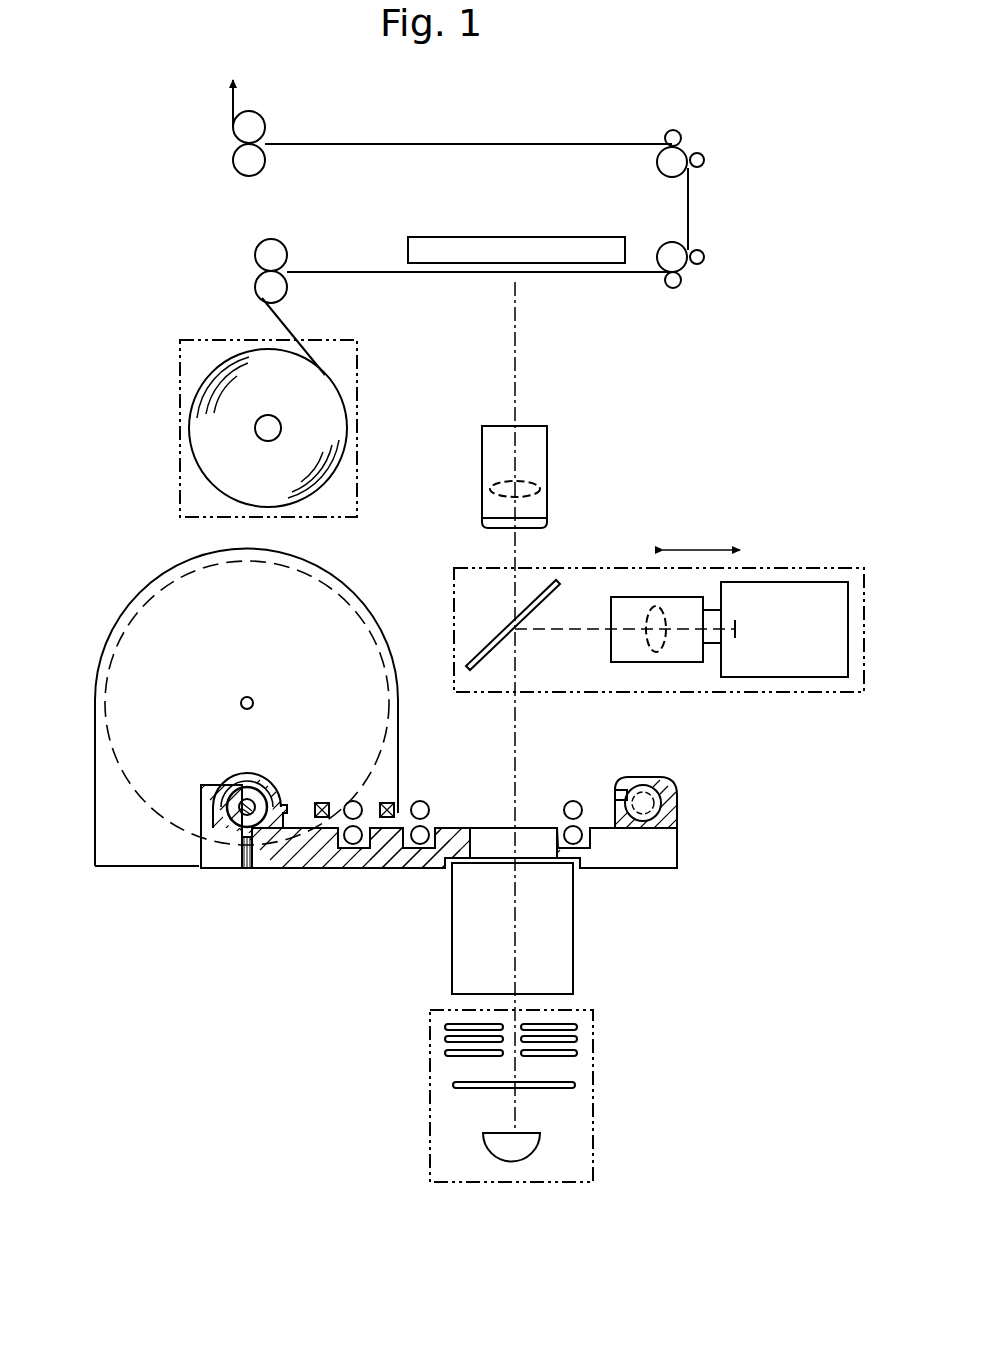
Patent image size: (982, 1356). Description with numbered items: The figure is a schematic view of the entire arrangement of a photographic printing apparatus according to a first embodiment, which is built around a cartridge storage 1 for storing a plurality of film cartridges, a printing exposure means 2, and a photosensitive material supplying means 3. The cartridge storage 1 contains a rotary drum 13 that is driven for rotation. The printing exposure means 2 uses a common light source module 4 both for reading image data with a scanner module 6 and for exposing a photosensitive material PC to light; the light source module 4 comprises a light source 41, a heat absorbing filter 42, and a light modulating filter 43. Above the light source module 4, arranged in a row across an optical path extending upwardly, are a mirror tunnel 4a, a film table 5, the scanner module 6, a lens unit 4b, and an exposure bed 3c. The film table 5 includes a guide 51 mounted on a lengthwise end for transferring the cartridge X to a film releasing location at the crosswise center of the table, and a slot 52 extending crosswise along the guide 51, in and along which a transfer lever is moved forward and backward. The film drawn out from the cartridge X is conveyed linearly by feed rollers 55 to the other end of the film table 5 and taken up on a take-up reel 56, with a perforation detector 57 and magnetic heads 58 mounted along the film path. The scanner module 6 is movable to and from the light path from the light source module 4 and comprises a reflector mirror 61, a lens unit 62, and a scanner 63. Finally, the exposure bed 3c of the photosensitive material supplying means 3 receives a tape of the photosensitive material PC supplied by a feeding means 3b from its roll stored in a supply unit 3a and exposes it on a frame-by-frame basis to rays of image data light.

The cartridge storage 1 is at (212, 707).
The rotary drum 13 is at (112, 676).
The printing exposure means 2 is at (710, 513).
The photosensitive material supplying means 3 is at (222, 312).
The supply unit 3a is at (180, 398).
The feeding means 3b is at (607, 134).
The exposure bed 3c is at (560, 240).
The photosensitive material PC is at (340, 270).
The light source module 4 is at (508, 1125).
The mirror tunnel 4a is at (560, 945).
The lens unit 4b is at (536, 449).
The light source 41 is at (513, 1158).
The heat absorbing filter 42 is at (455, 1085).
The light modulating filter 43 is at (445, 1037).
The film table 5 is at (444, 875).
The guide 51 is at (231, 813).
The slot 52 is at (252, 870).
The feed rollers 55 is at (355, 800).
The take-up reel 56 is at (672, 778).
The perforation detector 57 is at (320, 800).
The magnetic heads 58 is at (393, 802).
The cartridge X is at (237, 778).
The scanner module 6 is at (659, 627).
The reflector mirror 61 is at (527, 605).
The lens unit 62 is at (636, 597).
The scanner 63 is at (813, 665).